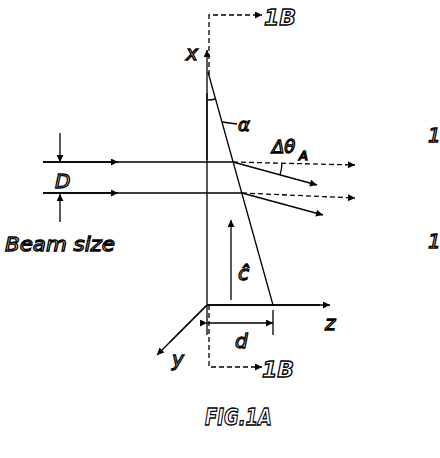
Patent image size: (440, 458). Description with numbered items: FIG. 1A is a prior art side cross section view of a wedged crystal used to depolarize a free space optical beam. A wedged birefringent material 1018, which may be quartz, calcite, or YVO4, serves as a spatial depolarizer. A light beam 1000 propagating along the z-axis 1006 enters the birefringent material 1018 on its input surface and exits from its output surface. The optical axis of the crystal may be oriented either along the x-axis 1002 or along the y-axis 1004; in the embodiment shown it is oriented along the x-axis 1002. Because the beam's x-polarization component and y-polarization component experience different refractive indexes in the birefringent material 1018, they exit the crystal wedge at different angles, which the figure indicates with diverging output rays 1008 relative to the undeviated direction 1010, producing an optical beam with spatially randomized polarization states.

The light beam 1000 is at (140, 160).
The x-axis 1002 is at (206, 93).
The wedged birefringent material 1018 is at (206, 143).
The y-axis 1004 is at (190, 322).
The z-axis 1006 is at (305, 305).
The refracted output beam 1008 is at (320, 214).
The undeviated beam direction 1010 is at (333, 164).